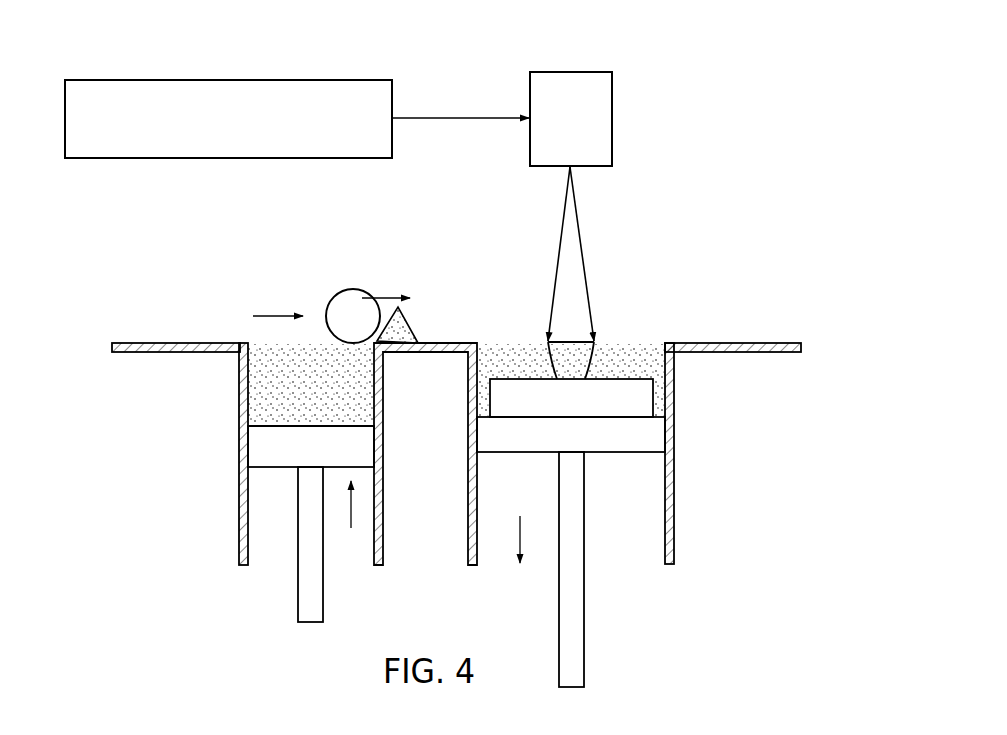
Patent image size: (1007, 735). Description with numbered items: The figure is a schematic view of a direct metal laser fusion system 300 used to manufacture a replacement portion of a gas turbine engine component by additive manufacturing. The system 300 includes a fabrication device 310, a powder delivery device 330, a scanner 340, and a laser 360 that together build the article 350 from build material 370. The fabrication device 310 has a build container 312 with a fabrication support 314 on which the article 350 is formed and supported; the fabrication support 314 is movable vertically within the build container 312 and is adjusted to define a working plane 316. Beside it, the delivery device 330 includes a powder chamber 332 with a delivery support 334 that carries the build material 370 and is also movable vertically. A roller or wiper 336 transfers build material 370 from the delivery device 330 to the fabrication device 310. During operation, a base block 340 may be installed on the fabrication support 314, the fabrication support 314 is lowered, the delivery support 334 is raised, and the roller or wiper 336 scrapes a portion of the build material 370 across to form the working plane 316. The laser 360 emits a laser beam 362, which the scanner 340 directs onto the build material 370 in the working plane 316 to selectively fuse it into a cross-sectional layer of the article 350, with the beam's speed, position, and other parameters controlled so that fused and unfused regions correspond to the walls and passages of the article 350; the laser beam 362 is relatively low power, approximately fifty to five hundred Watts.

The DMLF system 300 is at (719, 88).
The fabrication device 310 is at (702, 462).
The build container 312 is at (672, 368).
The fabrication support 314 is at (626, 452).
The working plane 316 is at (646, 351).
The powder delivery device 330 is at (168, 437).
The powder chamber 332 is at (246, 392).
The delivery support 334 is at (256, 444).
The roller or wiper 336 is at (351, 289).
The scanner 340 is at (571, 72).
The article 350 is at (538, 344).
The laser 360 is at (236, 80).
The laser beam 362 is at (462, 117).
The build material 370 is at (254, 376).